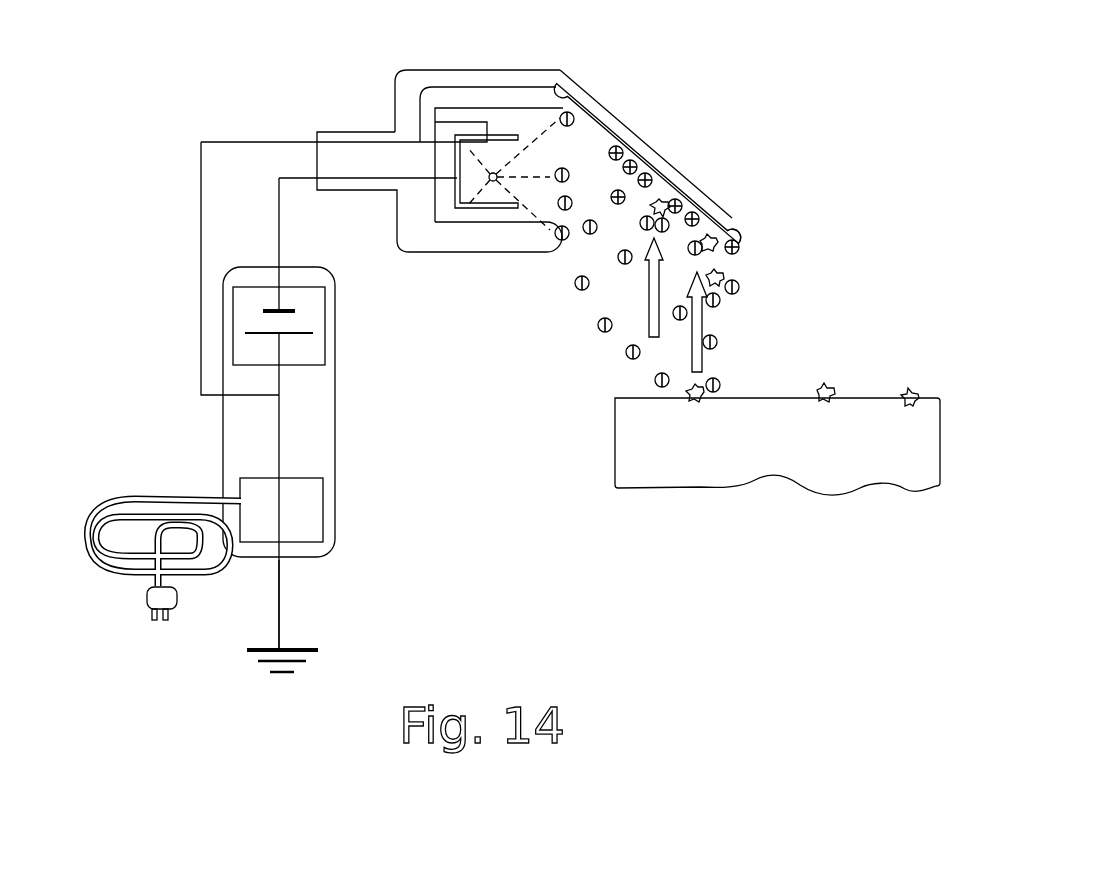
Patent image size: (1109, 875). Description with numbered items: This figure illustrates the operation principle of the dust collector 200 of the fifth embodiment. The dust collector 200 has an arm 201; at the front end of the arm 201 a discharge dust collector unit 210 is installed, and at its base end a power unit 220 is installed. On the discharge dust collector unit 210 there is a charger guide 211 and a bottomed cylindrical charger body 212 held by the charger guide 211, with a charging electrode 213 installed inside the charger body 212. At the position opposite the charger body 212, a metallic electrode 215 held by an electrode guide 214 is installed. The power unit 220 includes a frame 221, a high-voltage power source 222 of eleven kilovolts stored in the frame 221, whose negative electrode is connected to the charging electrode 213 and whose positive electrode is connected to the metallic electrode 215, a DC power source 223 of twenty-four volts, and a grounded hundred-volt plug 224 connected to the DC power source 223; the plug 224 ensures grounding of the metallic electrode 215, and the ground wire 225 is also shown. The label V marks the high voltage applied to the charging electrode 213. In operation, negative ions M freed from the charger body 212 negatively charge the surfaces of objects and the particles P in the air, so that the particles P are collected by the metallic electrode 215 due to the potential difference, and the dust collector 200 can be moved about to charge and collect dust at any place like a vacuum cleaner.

The dust collector 200 is at (723, 62).
The arm 201 is at (347, 192).
The discharge dust collector unit 210 is at (688, 172).
The charger guide 211 is at (435, 253).
The charger body 212 is at (497, 209).
The charging electrode 213 is at (493, 172).
The electrode guide 214 is at (603, 103).
The metallic electrode 215 is at (732, 230).
The power unit 220 is at (333, 443).
The frame 221 is at (245, 440).
The high-voltage power source 222 is at (323, 348).
The DC power source 223 is at (312, 512).
The grounded 100-V plug 224 is at (147, 594).
The ground wire 225 is at (283, 603).
The voltage V is at (533, 123).
The negative ions M is at (560, 241).
The particles P is at (826, 384).